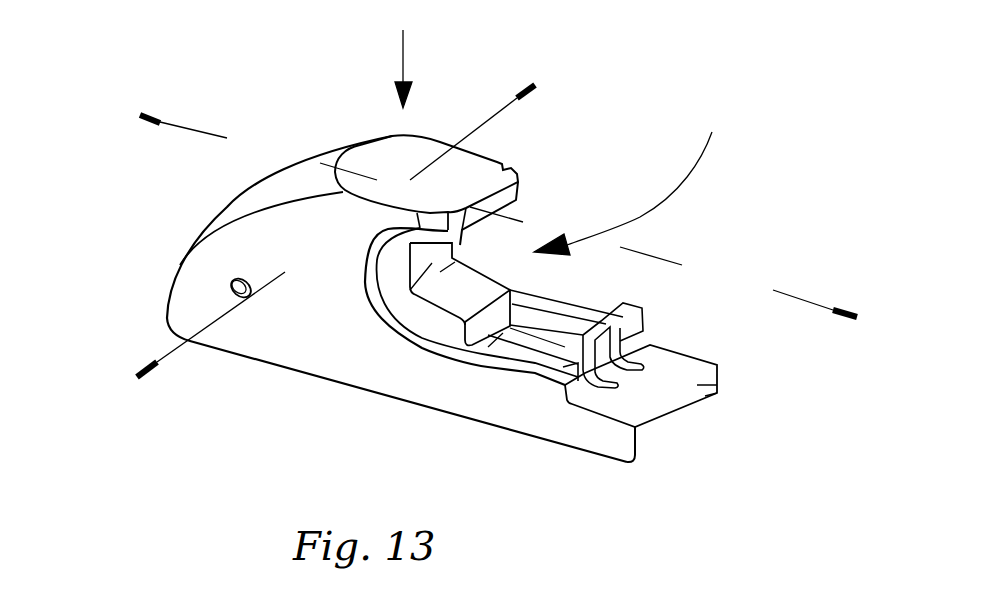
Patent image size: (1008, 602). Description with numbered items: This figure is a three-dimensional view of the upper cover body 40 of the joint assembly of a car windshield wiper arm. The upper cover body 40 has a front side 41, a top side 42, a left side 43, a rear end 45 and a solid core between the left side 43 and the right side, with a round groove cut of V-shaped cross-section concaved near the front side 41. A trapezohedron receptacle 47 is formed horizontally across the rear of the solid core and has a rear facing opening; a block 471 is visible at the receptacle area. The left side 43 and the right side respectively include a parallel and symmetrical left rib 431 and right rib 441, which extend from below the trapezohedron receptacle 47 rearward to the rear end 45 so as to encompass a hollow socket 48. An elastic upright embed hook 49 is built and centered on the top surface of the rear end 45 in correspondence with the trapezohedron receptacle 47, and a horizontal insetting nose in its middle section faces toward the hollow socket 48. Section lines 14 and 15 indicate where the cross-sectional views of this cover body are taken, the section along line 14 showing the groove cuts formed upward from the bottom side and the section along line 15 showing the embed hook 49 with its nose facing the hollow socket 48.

The upper cover body 40 is at (420, 25).
The front side 41 is at (334, 155).
The top side 42 is at (493, 163).
The left side 43 is at (258, 347).
The left rib 431 is at (488, 360).
The right rib 441 is at (557, 303).
The rear end 45 is at (657, 392).
The trapezohedron receptacle 47 is at (631, 180).
The engaging block 471 is at (408, 287).
The hollow socket 48 is at (547, 363).
The elastic upright embed hook 49 is at (637, 305).
The section line 14- 14 is at (512, 85).
The section line 15- 15 is at (142, 128).